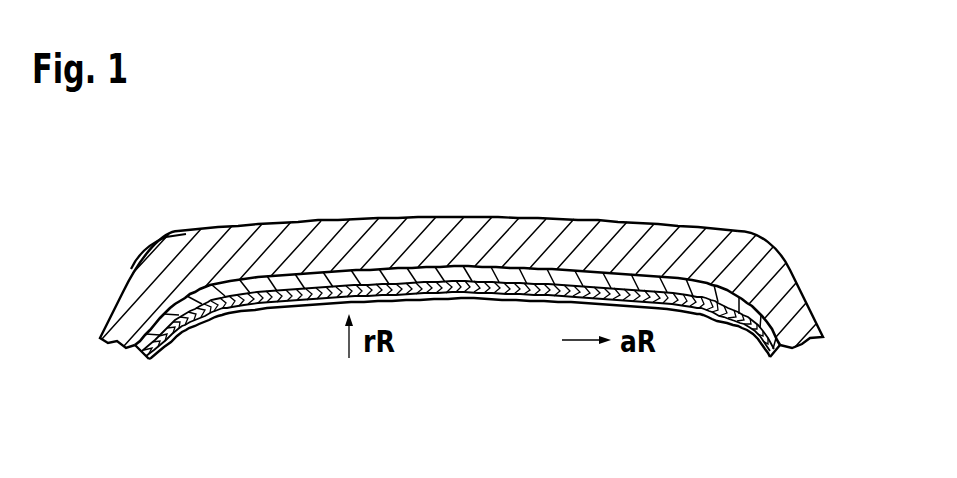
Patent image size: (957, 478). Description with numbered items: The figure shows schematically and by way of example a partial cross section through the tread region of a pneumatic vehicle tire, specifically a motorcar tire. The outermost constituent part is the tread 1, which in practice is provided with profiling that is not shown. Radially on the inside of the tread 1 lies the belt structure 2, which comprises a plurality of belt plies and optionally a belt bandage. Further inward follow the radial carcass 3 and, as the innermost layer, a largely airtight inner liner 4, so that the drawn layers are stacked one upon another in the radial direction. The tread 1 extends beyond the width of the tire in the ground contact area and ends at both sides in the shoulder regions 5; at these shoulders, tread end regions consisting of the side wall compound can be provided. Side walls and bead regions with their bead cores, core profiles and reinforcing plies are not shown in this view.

The tread 1 is at (452, 238).
The belt structure 2 is at (730, 284).
The radial carcass 3 is at (762, 326).
The inner liner 4 is at (763, 352).
The shoulder regions 5 is at (192, 222).